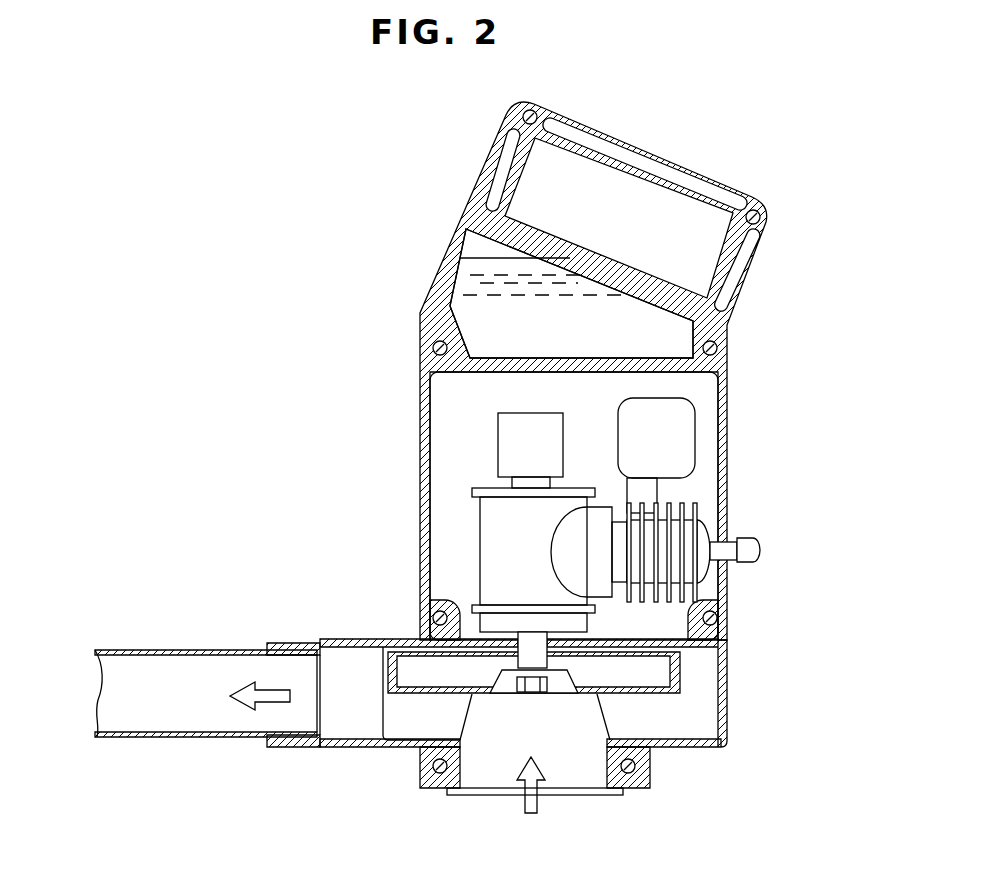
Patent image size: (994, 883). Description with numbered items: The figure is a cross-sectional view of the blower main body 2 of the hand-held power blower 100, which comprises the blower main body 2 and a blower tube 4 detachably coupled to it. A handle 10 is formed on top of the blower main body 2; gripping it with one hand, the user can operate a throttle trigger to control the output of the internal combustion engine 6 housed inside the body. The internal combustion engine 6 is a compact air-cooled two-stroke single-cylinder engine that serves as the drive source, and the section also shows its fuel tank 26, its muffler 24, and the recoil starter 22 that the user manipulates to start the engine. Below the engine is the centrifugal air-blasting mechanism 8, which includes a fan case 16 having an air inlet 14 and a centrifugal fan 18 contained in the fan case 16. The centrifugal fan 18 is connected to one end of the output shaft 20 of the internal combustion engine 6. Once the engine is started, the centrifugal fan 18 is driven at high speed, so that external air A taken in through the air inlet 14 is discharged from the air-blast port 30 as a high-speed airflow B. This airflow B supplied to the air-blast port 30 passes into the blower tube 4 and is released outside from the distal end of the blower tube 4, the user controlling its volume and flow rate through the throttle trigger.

The hand-held power blower 100 is at (237, 271).
The blower main body 2 is at (359, 293).
The handle 10 is at (663, 152).
The fuel tank 26 is at (503, 288).
The recoil starter 22 is at (508, 443).
The muffler 24 is at (675, 450).
The internal combustion engine 6 is at (677, 532).
The fan case 16 is at (731, 671).
The centrifugal air-blasting mechanism 8 is at (698, 692).
The centrifugal fan 18 is at (660, 727).
The air inlet 14 is at (588, 773).
The output shaft 20 is at (521, 653).
The air-blast port 30 is at (307, 743).
The blower tube 4 is at (170, 735).
The external air A is at (530, 782).
The high-speed airflow B is at (263, 703).